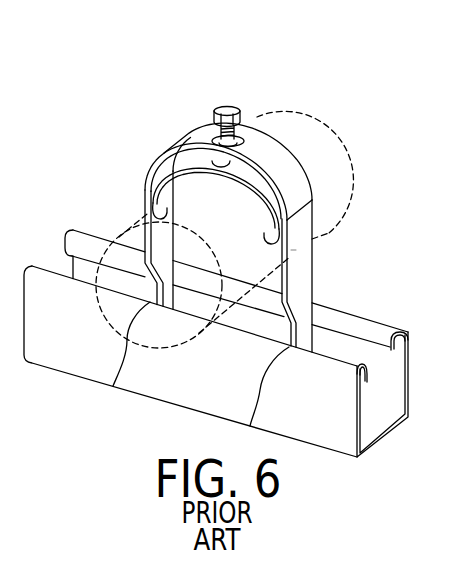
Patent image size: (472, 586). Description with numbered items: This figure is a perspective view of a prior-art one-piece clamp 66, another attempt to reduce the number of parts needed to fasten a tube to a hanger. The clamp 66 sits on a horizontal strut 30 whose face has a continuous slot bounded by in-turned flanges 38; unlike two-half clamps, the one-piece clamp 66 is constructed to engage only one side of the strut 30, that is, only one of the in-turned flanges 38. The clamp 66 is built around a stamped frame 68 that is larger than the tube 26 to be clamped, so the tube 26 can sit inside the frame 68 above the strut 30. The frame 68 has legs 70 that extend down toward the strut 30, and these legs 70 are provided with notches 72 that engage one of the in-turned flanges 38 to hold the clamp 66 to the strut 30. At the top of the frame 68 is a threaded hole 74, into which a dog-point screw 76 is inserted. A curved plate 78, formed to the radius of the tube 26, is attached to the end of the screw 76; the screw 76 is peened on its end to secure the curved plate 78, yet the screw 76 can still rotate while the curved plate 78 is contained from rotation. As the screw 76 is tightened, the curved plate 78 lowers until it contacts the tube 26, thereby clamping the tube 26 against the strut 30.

The tube 26 is at (352, 124).
The strut 30 is at (233, 343).
The in-turned flanges 38 is at (391, 350).
The one-piece clamp 66 is at (176, 74).
The stamped frame 68 is at (313, 204).
The legs 70 is at (150, 210).
The notches 72 is at (112, 386).
The threaded hole 74 is at (245, 133).
The dog-point screw 76 is at (229, 105).
The curved plate 78 is at (290, 258).